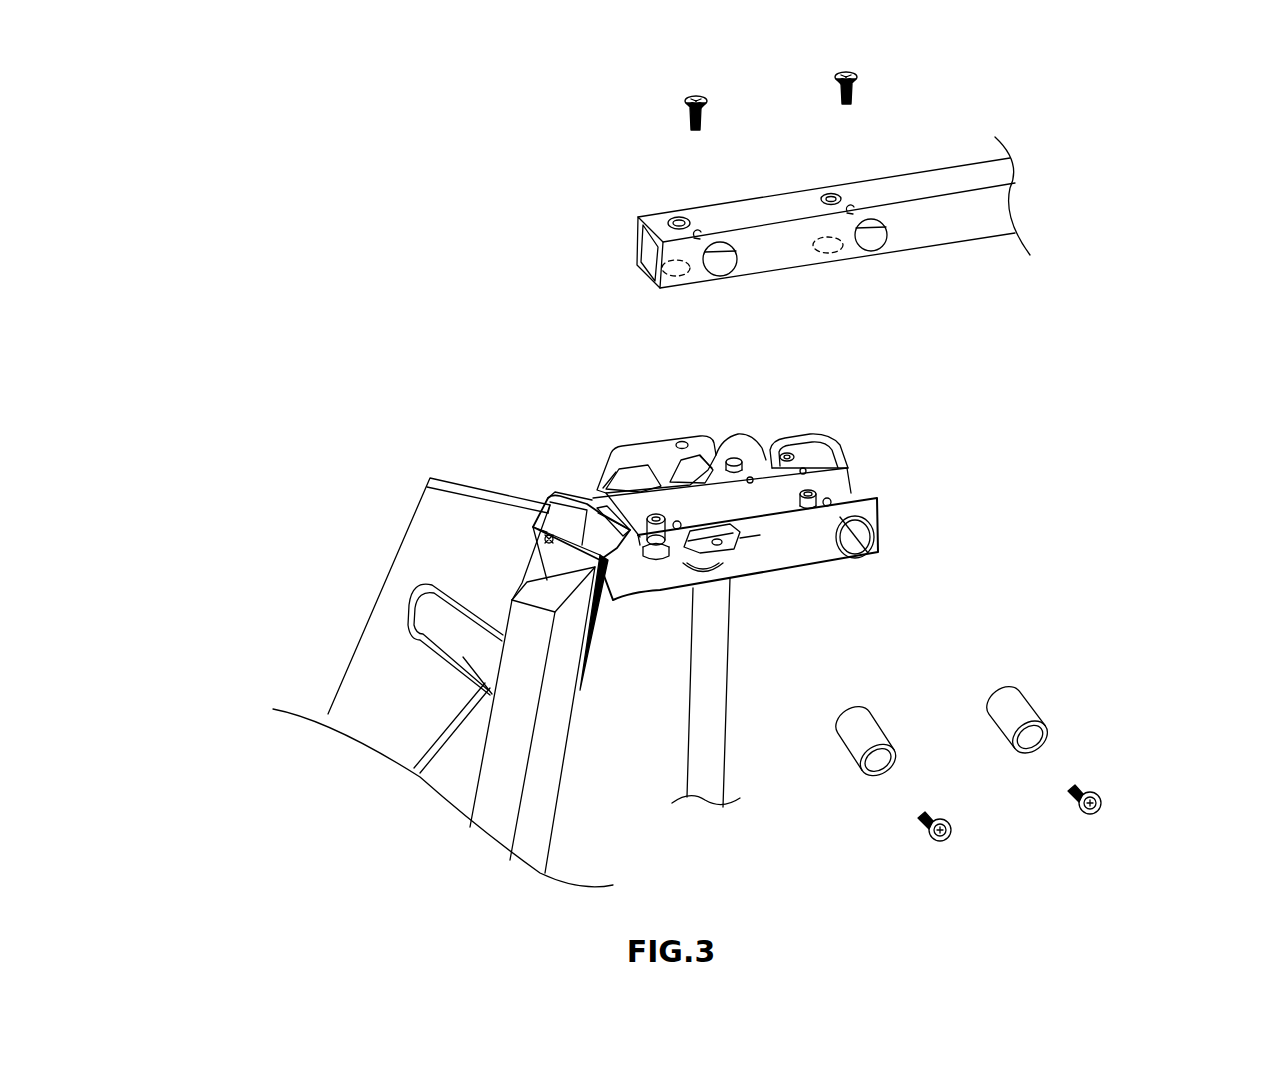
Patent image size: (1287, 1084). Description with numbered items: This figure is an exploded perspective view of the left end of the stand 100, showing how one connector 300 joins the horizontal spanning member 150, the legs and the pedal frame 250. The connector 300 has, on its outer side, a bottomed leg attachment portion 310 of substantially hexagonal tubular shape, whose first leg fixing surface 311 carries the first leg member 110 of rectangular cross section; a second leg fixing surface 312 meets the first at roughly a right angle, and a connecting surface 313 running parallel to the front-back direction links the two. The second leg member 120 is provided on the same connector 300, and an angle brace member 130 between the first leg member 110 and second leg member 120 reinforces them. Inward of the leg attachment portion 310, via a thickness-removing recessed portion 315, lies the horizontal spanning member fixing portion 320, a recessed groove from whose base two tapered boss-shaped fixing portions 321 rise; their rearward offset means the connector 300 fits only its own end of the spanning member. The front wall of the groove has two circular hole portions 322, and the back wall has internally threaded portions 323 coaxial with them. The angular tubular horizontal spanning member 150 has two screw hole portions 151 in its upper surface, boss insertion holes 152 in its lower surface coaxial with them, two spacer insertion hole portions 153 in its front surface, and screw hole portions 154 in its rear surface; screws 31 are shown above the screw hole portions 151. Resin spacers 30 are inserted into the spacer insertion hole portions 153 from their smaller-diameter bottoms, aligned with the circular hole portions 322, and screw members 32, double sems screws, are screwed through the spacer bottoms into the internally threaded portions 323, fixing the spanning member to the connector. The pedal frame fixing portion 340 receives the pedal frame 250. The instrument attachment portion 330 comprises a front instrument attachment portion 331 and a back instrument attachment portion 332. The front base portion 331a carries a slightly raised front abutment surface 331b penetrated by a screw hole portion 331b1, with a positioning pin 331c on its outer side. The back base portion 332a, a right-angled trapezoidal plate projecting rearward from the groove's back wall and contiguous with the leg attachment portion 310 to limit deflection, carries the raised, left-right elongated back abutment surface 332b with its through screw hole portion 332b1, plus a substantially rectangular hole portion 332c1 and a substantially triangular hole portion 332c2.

The stand 100 is at (240, 260).
The first leg member 110 is at (502, 793).
The second leg member 120 is at (378, 593).
The angle brace member 130 is at (492, 652).
The horizontal spanning member 150 is at (909, 174).
The screw hole portion 151 is at (667, 215).
The boss insertion hole 152 is at (660, 262).
The spacer insertion hole portion 153 is at (725, 242).
The screw hole portion 154 is at (696, 230).
The pedal frame 250 is at (703, 748).
The connector 300 is at (711, 552).
The leg attachment portion 310 is at (460, 518).
The first leg fixing surface 311 is at (603, 617).
The second leg fixing surface 312 is at (528, 512).
The connecting surface 313 is at (537, 538).
The thickness-removing recessed portion 315 is at (603, 510).
The horizontal spanning member fixing portion 320 is at (897, 590).
The boss-shaped fixing portion 321 is at (832, 442).
The circular hole portion 322 is at (877, 553).
The internally threaded portion 323 is at (843, 495).
The instrument attachment portion 330 is at (683, 515).
The front instrument attachment portion 331 is at (589, 727).
The front base portion 331a is at (730, 558).
The front abutment surface 331b is at (717, 545).
The screw hole portion 331b1 is at (727, 570).
The positioning pin 331c is at (508, 582).
The back instrument attachment portion 332 is at (550, 333).
The back base portion 332a is at (603, 478).
The back abutment surface 332b is at (657, 448).
The screw hole portion 332b1 is at (688, 436).
The substantially rectangular hole portion 332c1 is at (713, 440).
The substantially triangular hole portion 332c2 is at (627, 480).
The pedal frame fixing portion 340 is at (887, 374).
The spacer 30 is at (863, 733).
The screw 31 is at (683, 102).
The screw member 32 is at (948, 835).